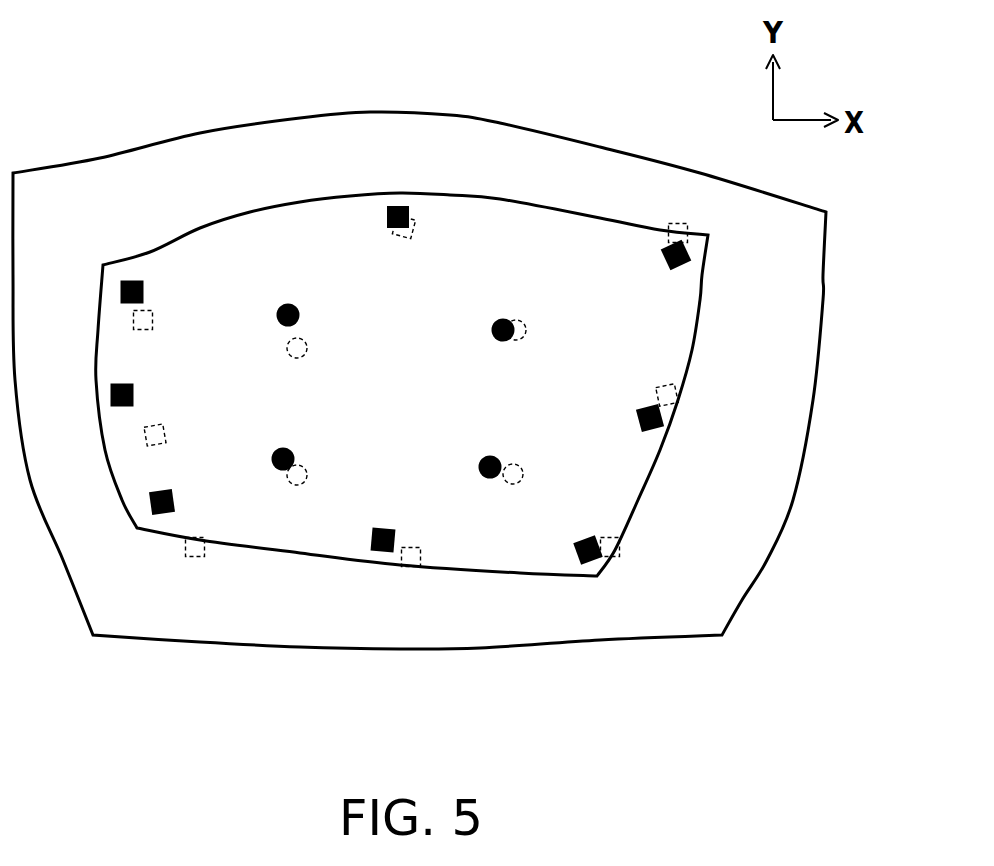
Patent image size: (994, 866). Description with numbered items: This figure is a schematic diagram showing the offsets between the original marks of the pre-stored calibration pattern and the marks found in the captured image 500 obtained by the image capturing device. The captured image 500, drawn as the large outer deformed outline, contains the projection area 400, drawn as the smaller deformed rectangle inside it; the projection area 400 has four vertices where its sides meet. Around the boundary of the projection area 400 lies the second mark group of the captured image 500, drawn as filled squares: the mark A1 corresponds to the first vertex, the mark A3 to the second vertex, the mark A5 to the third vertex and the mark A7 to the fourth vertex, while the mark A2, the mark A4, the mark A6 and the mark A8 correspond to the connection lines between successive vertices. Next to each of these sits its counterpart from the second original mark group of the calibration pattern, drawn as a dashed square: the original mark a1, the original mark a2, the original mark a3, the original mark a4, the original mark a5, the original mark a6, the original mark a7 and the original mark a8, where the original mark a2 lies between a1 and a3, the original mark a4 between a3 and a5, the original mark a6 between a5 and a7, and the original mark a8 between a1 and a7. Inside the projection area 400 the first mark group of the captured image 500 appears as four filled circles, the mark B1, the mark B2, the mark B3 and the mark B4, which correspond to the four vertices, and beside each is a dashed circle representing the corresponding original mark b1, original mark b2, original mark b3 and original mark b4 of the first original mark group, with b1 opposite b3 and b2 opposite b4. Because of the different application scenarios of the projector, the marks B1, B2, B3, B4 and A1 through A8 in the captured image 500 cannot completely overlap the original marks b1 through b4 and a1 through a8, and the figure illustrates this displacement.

The projection area 400 is at (523, 575).
The captured image 500 is at (680, 638).
The mark A1 is at (146, 278).
The mark A2 is at (120, 379).
The mark A3 is at (150, 487).
The mark A4 is at (365, 535).
The mark A5 is at (570, 552).
The mark A6 is at (643, 434).
The mark A7 is at (669, 273).
The mark A8 is at (380, 220).
The original mark a1 is at (160, 318).
The original mark a2 is at (171, 432).
The original mark a3 is at (192, 567).
The original mark a4 is at (408, 577).
The original mark a5 is at (610, 531).
The original mark a6 is at (668, 379).
The original mark a7 is at (677, 218).
The original mark a8 is at (411, 242).
The mark B1 is at (302, 302).
The mark B2 is at (268, 446).
The mark B3 is at (487, 451).
The mark B4 is at (488, 330).
The original mark b1 is at (313, 348).
The original mark b2 is at (314, 469).
The original mark b3 is at (531, 472).
The original mark b4 is at (532, 330).